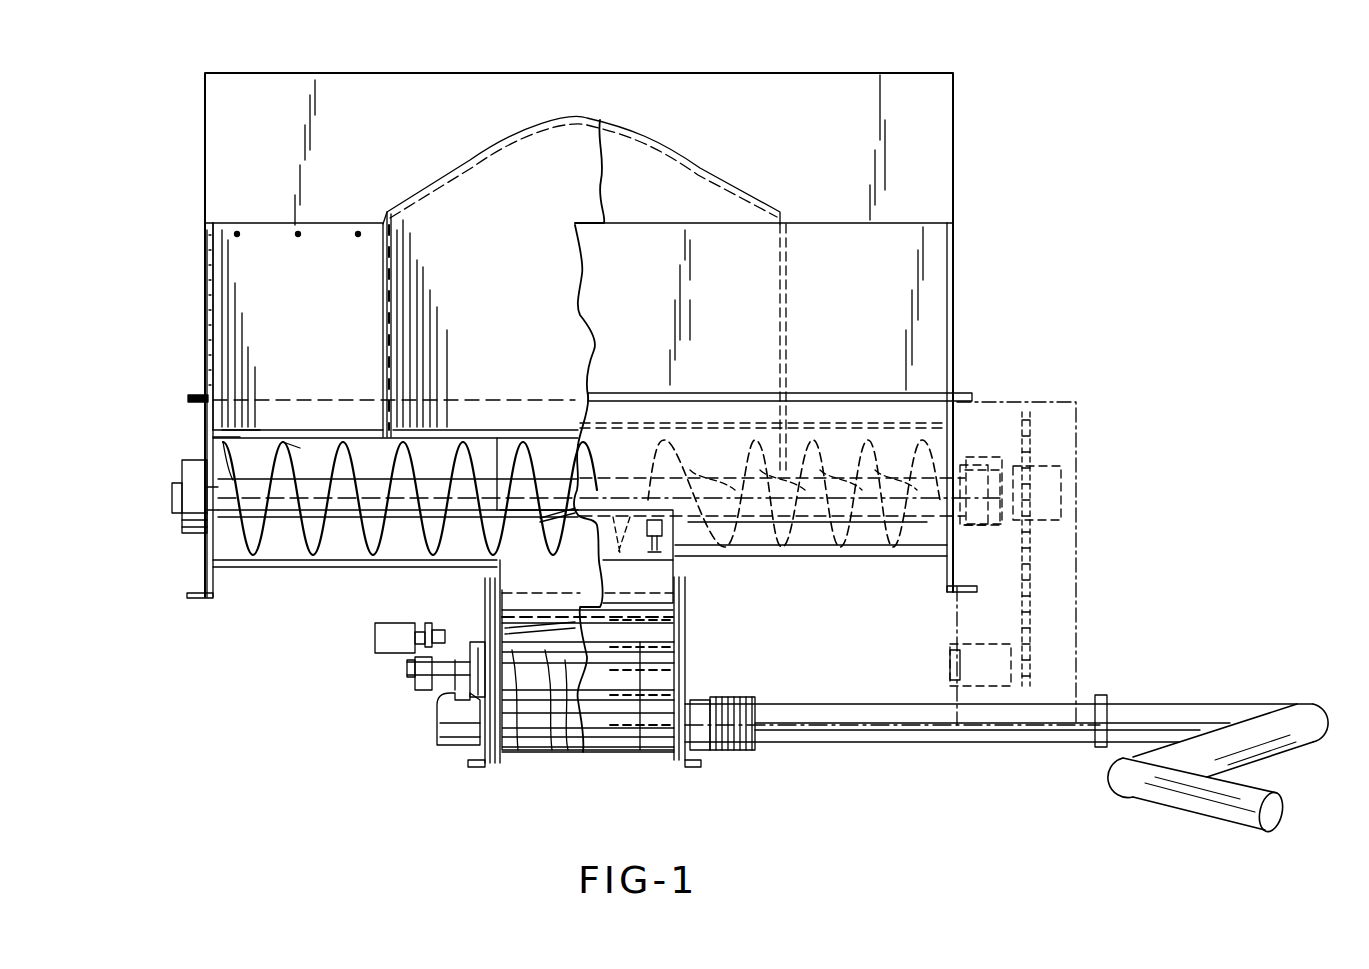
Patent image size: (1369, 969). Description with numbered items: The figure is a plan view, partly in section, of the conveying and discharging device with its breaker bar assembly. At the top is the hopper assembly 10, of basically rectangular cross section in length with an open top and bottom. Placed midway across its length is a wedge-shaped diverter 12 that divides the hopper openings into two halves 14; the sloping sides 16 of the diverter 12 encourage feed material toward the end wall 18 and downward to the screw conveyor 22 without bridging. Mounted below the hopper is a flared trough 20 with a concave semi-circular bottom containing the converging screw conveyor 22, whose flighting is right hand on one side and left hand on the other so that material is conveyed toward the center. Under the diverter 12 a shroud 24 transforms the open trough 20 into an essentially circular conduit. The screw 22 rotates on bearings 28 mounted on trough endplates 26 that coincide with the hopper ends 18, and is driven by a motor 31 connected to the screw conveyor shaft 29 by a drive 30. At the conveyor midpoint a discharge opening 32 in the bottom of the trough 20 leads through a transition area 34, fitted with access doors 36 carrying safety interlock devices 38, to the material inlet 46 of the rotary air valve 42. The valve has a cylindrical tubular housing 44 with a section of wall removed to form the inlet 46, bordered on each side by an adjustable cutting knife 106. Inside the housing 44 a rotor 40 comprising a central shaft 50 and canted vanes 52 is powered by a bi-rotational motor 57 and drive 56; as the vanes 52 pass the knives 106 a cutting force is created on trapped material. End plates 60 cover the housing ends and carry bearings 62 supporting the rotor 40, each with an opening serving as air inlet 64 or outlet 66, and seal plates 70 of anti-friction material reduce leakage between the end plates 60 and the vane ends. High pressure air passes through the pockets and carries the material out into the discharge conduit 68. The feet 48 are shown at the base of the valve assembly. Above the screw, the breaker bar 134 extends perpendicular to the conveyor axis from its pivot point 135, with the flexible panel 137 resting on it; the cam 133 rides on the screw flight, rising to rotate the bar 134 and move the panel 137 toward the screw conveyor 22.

The hopper assembly 10 is at (983, 270).
The diverter 12 is at (475, 158).
The hopper opening halves 14 is at (250, 265).
The sides of the diverter 16 is at (440, 186).
The end wall 18 is at (205, 290).
The trough 20 is at (340, 570).
The screw conveyor 22 is at (300, 447).
The shroud 24 is at (437, 427).
The trough endplates 26 is at (200, 410).
The bearings 28 is at (178, 472).
The screw conveyor shaft 29 is at (1065, 492).
The drive 30 is at (1030, 592).
The motor 31 is at (950, 658).
The discharge opening 32 is at (553, 518).
The transition area 34 is at (490, 565).
The access doors 36 is at (670, 592).
The safety interlock devices 38 is at (660, 545).
The rotor 40 is at (527, 680).
The rotary air valve 42 is at (613, 760).
The cylindrical tubular housing 44 is at (640, 755).
The material inlet 46 is at (525, 610).
The foot 48 is at (475, 765).
The rotor shaft 50 is at (410, 670).
The vanes 52 is at (565, 700).
The drive 56 is at (465, 690).
The bi-rotational motor 57 is at (378, 635).
The end plates 60 is at (485, 640).
The bearings 62 is at (455, 703).
The air inlet 64 is at (470, 728).
The air outlet 66 is at (700, 738).
The discharge conduit 68 is at (925, 744).
The seal plate 70 is at (512, 700).
The cutting knife 106 is at (600, 628).
The cam 133 is at (298, 448).
The breaker bar 134 is at (266, 430).
The pivot point 135 is at (192, 437).
The flexible panel 137 is at (222, 333).